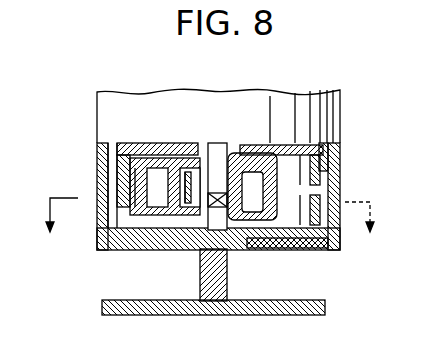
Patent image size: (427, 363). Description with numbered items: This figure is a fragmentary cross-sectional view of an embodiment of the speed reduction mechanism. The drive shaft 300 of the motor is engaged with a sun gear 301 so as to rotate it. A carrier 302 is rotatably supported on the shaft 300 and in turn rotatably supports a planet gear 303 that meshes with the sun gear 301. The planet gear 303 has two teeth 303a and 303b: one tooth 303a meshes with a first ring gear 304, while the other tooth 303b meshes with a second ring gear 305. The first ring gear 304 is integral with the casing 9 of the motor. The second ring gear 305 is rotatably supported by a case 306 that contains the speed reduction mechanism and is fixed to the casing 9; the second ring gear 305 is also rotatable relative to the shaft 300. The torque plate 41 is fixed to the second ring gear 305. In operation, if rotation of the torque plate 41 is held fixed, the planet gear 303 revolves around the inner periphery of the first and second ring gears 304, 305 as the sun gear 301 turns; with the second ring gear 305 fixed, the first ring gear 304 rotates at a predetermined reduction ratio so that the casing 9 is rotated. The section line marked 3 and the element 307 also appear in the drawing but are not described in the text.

The casing 9 is at (118, 92).
The section line 3 is at (233, 221).
The torque plate 41 is at (325, 308).
The drive shaft 300 is at (211, 160).
The sun gear 301 is at (200, 252).
The carrier 302 is at (272, 240).
The planet gear 303 is at (180, 226).
The tooth 303a is at (135, 175).
The tooth 303b is at (120, 200).
The first ring gear 304 is at (322, 187).
The second ring gear 305 is at (328, 243).
The case 306 is at (333, 157).
The channel member 307 is at (158, 163).